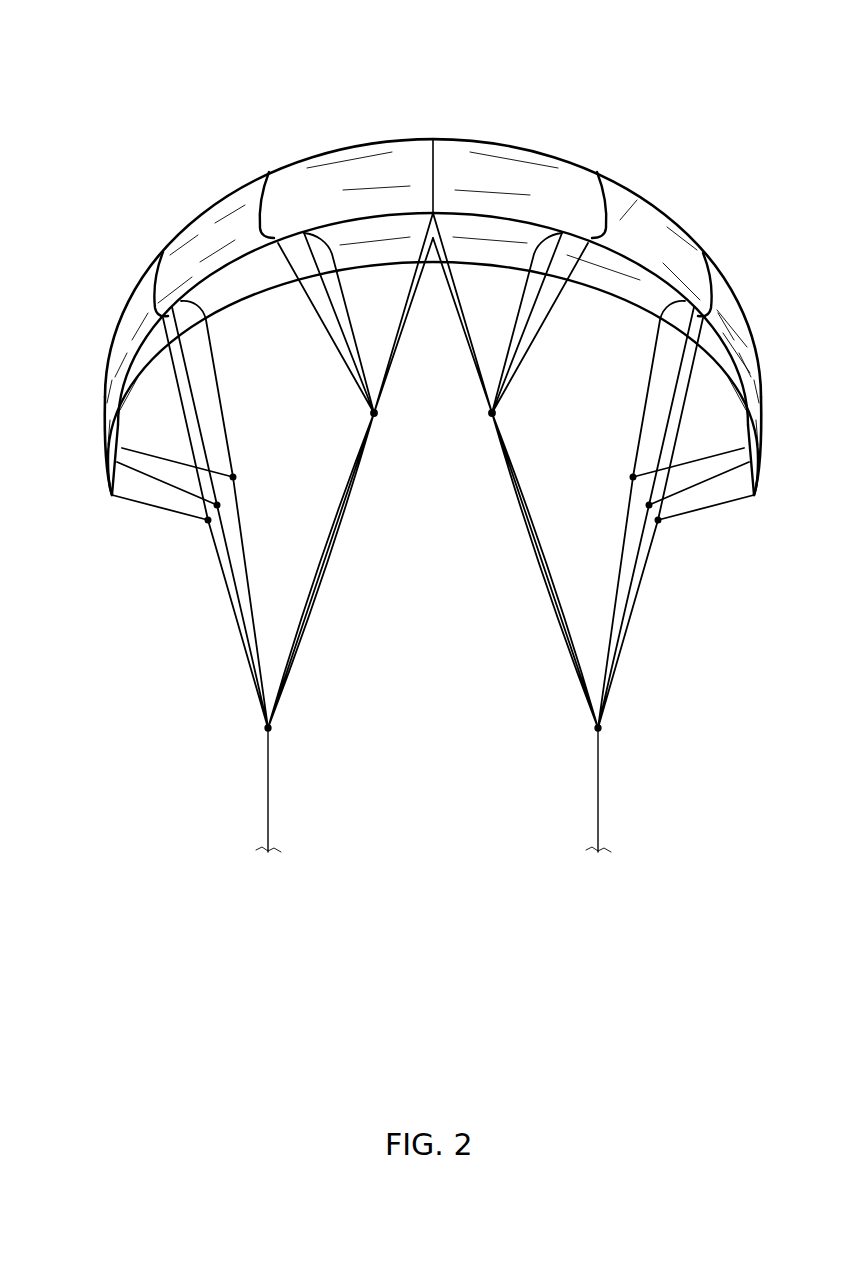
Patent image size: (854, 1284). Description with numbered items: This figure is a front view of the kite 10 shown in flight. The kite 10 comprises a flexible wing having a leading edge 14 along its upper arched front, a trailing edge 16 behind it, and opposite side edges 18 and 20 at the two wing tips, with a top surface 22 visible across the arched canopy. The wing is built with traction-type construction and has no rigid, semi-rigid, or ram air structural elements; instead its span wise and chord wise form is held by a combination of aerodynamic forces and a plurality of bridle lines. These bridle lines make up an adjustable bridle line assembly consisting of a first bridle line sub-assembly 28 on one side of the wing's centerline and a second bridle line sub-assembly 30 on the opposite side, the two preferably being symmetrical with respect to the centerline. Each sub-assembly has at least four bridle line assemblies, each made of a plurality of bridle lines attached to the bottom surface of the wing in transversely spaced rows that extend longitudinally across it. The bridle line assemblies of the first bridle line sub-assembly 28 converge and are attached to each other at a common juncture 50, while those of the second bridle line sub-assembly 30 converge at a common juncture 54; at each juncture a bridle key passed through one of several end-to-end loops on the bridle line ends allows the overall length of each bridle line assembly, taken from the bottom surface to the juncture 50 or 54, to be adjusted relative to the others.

The kite 10 is at (704, 87).
The leading edge 14 is at (618, 222).
The trailing edge 16 is at (627, 306).
The side edge 18 is at (112, 497).
The side edge 20 is at (755, 497).
The top surface 22 is at (450, 150).
The first bridle line sub-assembly 28 is at (207, 606).
The second bridle line sub-assembly 30 is at (659, 606).
The common juncture 50 is at (268, 728).
The common juncture 54 is at (598, 728).